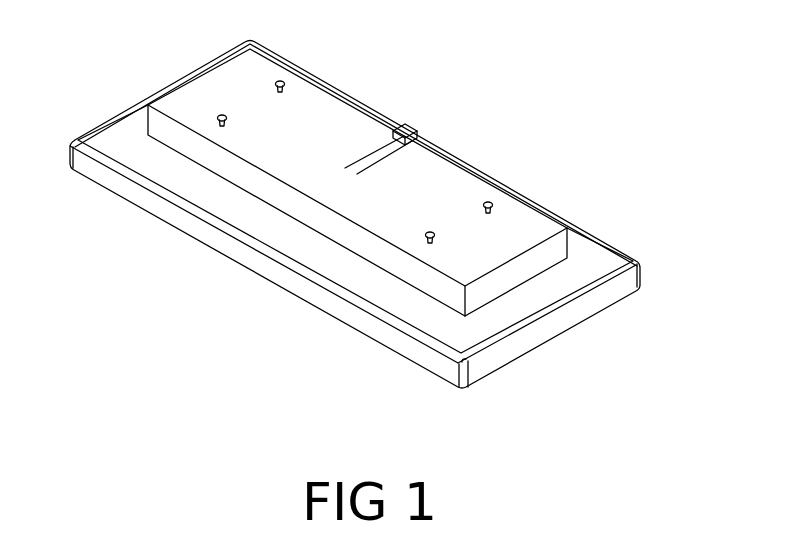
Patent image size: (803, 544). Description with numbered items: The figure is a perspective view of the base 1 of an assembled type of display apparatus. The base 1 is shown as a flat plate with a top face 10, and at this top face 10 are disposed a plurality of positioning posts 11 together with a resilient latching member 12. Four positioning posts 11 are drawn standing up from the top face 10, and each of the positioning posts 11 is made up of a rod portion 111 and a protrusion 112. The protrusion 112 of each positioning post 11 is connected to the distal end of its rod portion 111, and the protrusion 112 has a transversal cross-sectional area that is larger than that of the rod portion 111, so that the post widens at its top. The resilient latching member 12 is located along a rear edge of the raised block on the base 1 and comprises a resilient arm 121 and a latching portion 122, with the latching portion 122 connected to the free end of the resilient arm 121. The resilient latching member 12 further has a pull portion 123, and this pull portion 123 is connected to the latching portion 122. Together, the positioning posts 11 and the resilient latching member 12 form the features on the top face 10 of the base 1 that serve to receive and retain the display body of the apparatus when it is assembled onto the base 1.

The base 1 is at (648, 49).
The top face 10 is at (518, 212).
The positioning posts 11 is at (355, 253).
The rod portion 111 is at (430, 247).
The protrusion 112 is at (427, 240).
The resilient latching member 12 is at (443, 95).
The resilient arm 121 is at (378, 152).
The latching portion 122 is at (407, 127).
The pull portion 123 is at (466, 122).